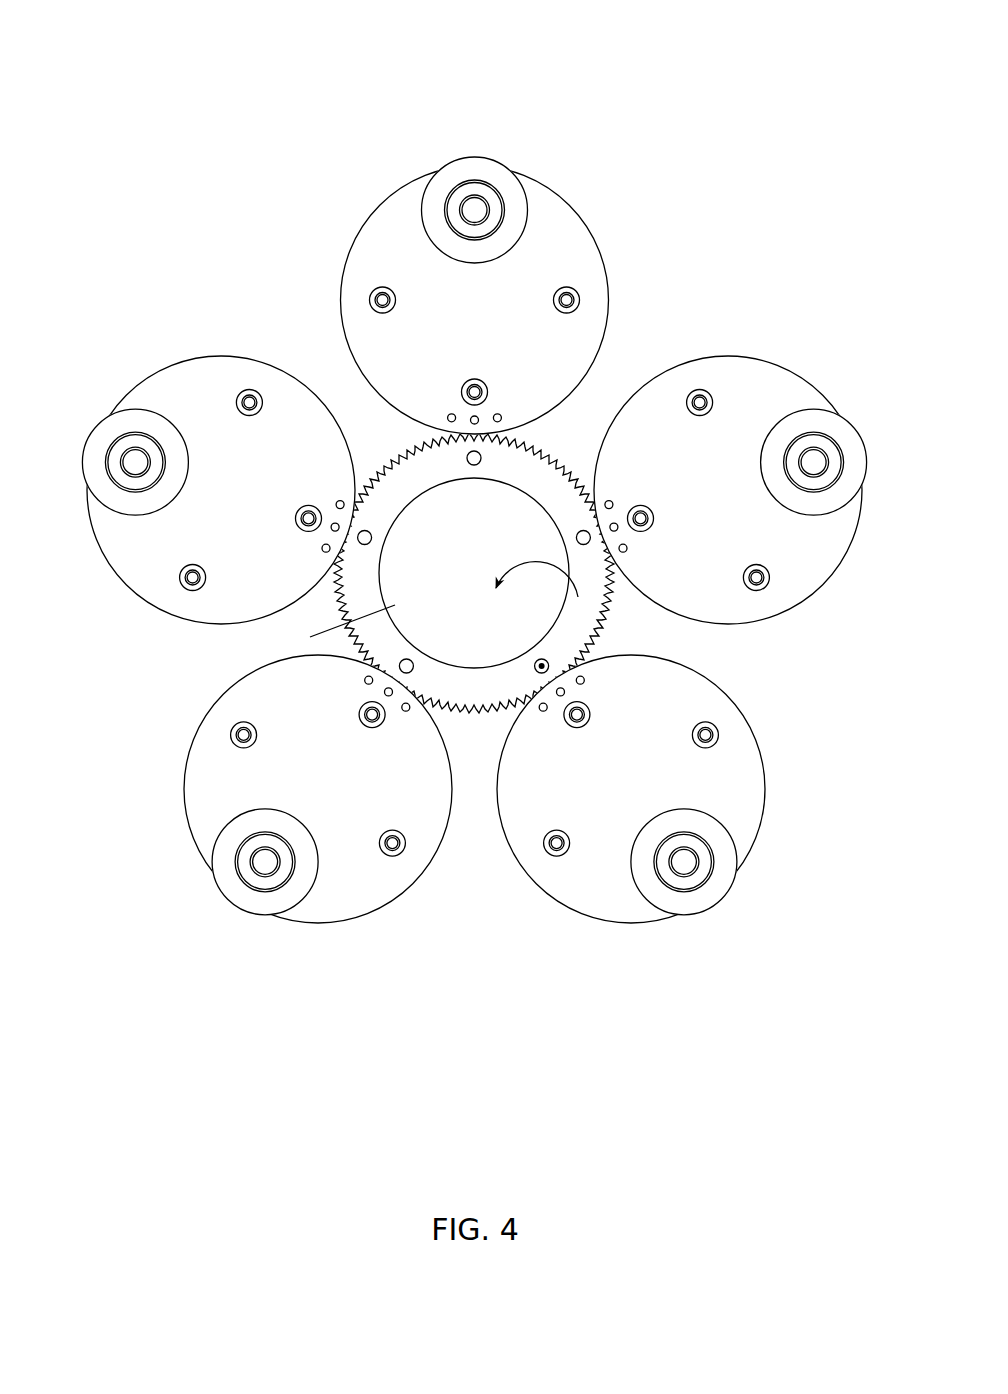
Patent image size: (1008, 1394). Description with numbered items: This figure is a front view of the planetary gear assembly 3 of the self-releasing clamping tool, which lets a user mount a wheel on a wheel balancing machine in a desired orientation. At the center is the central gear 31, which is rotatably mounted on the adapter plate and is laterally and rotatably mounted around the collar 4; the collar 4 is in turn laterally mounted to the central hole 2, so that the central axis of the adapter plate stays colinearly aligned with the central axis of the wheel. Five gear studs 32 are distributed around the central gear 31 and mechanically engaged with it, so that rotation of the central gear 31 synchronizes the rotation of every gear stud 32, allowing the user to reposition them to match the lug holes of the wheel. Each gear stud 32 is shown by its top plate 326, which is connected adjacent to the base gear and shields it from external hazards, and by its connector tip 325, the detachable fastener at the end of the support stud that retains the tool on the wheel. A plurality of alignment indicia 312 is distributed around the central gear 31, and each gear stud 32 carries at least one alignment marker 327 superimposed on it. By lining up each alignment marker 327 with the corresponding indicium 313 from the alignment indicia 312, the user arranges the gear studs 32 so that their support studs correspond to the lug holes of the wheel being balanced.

The central hole 2 is at (542, 594).
The planetary gear assembly 3 is at (910, 123).
The collar 4 is at (310, 637).
The central gear 31 is at (607, 620).
The alignment indicia 312 is at (576, 538).
The corresponding indicium 313 is at (542, 667).
The gear studs 32 is at (461, 538).
The connector tip 325 is at (457, 257).
The top plate 326 is at (205, 370).
The alignment marker 327 is at (480, 414).